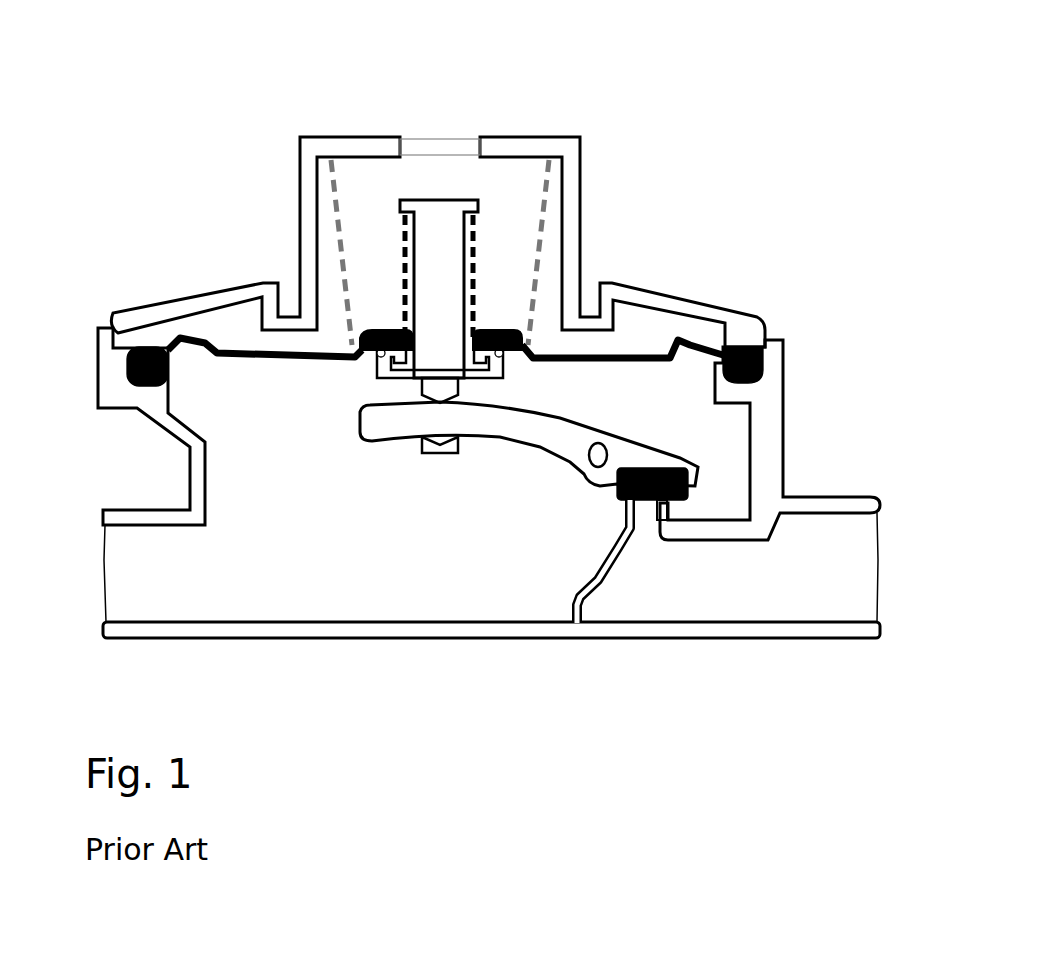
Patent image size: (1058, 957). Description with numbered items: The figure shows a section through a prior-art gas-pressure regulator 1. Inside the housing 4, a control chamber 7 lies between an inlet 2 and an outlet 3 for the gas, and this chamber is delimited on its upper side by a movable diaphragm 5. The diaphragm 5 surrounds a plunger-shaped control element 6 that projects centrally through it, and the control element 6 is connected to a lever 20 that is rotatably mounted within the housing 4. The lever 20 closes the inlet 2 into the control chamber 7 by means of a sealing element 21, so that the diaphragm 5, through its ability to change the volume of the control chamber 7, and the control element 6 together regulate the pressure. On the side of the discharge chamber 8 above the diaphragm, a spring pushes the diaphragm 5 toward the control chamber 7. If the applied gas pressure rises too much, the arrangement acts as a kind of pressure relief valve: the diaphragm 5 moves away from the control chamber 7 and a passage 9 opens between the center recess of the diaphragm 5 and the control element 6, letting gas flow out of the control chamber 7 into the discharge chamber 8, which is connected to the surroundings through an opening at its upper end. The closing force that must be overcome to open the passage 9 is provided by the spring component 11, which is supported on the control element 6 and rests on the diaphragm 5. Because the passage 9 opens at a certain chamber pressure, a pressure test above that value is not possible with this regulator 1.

The gas-pressure regulator 1 is at (672, 131).
The inlet 2 is at (845, 553).
The outlet 3 is at (152, 561).
The housing 4 is at (660, 304).
The diaphragm 5 is at (212, 347).
The control element 6 is at (437, 245).
The control chamber 7 is at (322, 578).
The discharge chamber 8 is at (328, 311).
The passage 9 is at (362, 376).
The spring component 11 is at (477, 300).
The lever 20 is at (395, 442).
The sealing element 21 is at (677, 467).